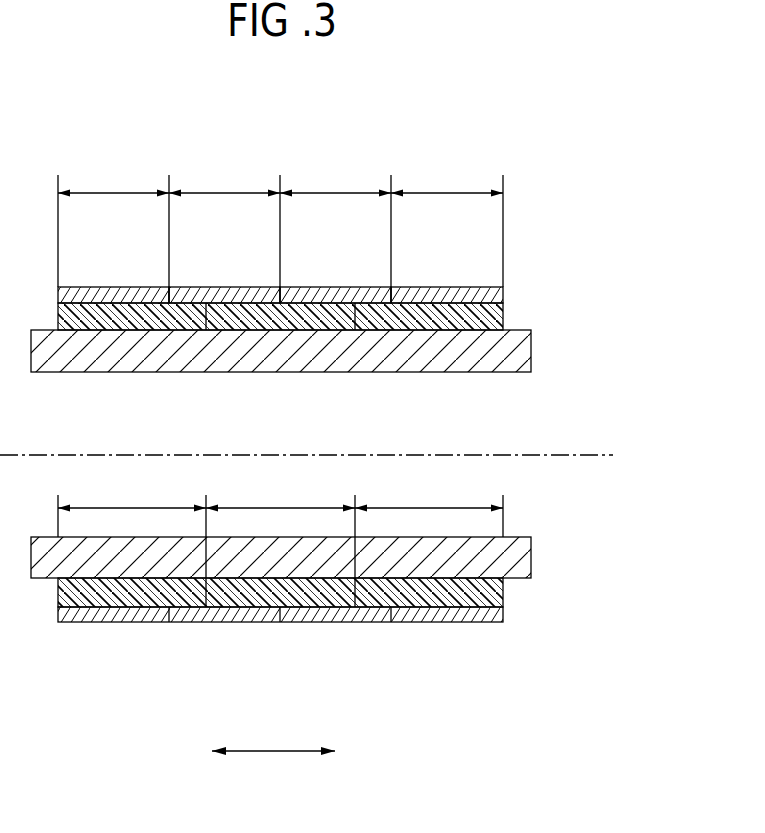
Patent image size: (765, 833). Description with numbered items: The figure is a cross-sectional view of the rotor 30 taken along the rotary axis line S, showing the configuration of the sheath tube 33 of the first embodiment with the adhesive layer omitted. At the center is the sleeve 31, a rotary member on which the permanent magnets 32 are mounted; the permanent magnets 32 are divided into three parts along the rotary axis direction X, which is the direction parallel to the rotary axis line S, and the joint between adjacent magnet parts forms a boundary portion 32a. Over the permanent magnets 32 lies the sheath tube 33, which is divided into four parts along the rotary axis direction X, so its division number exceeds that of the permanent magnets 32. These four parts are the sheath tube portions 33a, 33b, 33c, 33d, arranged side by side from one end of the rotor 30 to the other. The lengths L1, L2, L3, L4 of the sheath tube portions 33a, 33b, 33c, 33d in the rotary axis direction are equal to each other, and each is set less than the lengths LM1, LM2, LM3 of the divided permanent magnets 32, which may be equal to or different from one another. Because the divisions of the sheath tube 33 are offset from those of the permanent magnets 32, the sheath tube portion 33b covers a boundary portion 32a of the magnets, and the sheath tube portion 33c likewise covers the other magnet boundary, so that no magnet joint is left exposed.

The rotor 30 is at (578, 226).
The sleeve 31 is at (532, 341).
The permanent magnets 32 is at (280, 455).
The boundary portion 32a is at (196, 319).
The sheath tube 33 is at (330, 420).
The sheath tube portion 33a is at (119, 287).
The sheath tube portion 33b is at (226, 287).
The sheath tube portion 33c is at (334, 287).
The sheath tube portion 33d is at (442, 287).
The rotary axis line S is at (571, 454).
The rotary axis direction X is at (272, 752).
The length of sheath tube portion L1 is at (113, 230).
The length of sheath tube portion L2 is at (224, 230).
The length of sheath tube portion L3 is at (335, 230).
The length of sheath tube portion L4 is at (447, 222).
The length of divided permanent magnet LM1 is at (132, 527).
The length of divided permanent magnet LM2 is at (280, 527).
The length of divided permanent magnet LM3 is at (429, 506).